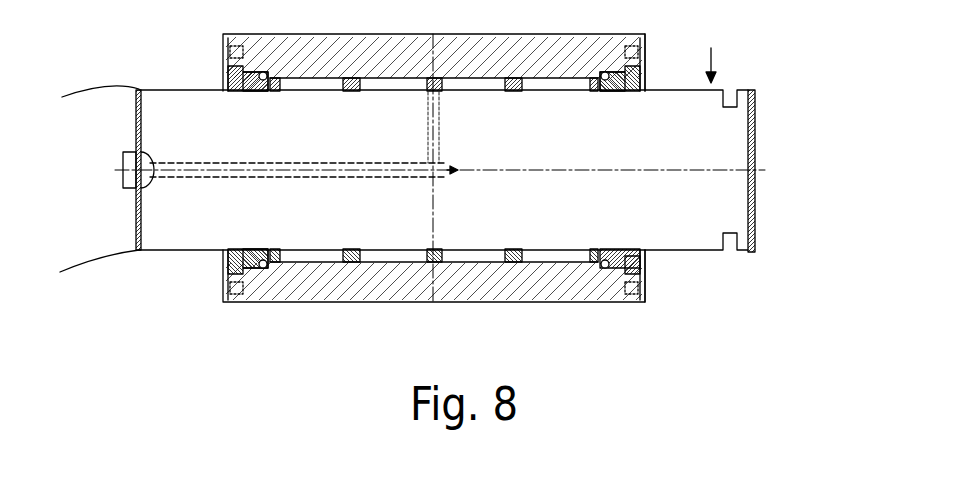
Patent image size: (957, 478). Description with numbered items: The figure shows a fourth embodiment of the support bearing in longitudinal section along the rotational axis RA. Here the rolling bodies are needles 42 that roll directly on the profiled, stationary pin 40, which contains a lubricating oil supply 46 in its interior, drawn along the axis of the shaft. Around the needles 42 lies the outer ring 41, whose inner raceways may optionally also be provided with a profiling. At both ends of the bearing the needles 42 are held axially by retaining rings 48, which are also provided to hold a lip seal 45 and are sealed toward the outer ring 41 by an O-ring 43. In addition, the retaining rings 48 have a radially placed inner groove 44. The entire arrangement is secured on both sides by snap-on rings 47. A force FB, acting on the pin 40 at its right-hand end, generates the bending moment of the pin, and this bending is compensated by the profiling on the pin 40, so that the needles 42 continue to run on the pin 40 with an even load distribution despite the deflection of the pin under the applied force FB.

The pin 40 is at (463, 243).
The outer ring 41 is at (325, 285).
The needle 42 is at (388, 257).
The O-ring 43 is at (594, 270).
The inner groove 44 is at (636, 268).
The lip seal 45 is at (647, 260).
The lubricating oil supply 46 is at (205, 173).
The snap-on ring 47 is at (243, 283).
The retaining ring 48 is at (605, 268).
The rotational axis RA is at (672, 168).
The force for generating the bending moment FB is at (711, 50).